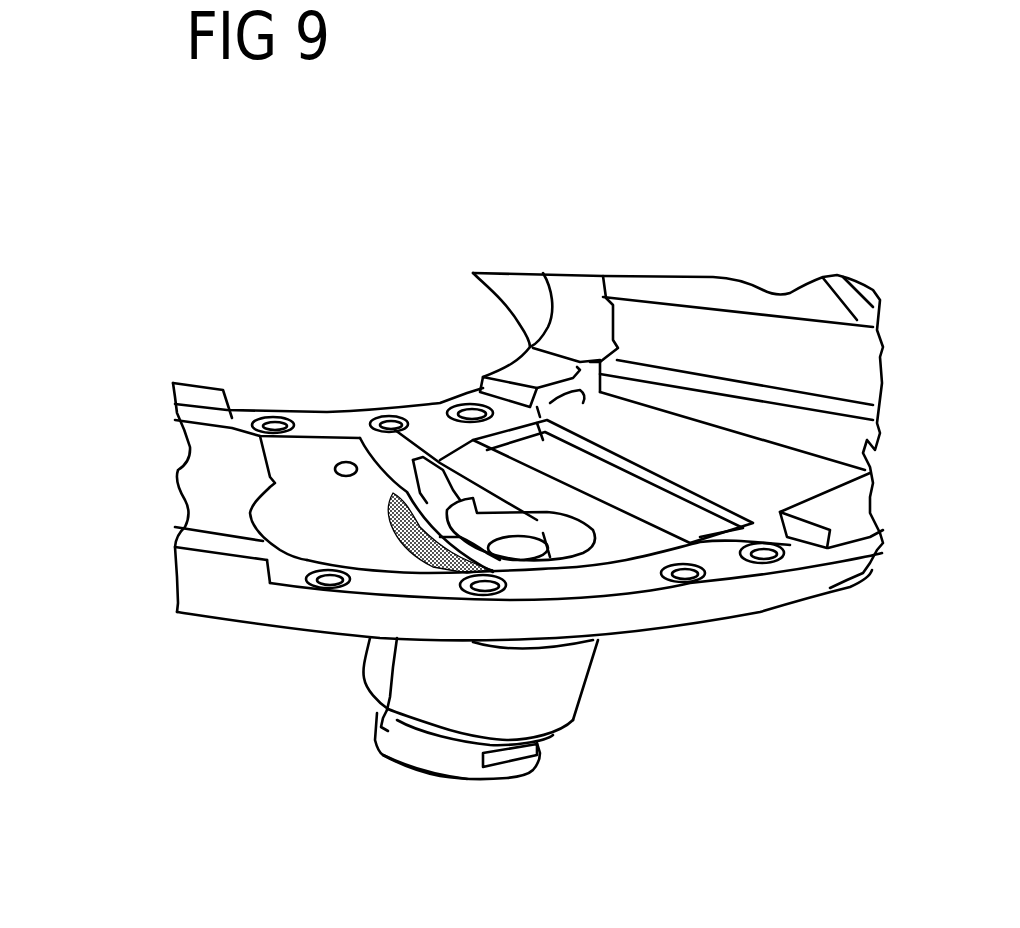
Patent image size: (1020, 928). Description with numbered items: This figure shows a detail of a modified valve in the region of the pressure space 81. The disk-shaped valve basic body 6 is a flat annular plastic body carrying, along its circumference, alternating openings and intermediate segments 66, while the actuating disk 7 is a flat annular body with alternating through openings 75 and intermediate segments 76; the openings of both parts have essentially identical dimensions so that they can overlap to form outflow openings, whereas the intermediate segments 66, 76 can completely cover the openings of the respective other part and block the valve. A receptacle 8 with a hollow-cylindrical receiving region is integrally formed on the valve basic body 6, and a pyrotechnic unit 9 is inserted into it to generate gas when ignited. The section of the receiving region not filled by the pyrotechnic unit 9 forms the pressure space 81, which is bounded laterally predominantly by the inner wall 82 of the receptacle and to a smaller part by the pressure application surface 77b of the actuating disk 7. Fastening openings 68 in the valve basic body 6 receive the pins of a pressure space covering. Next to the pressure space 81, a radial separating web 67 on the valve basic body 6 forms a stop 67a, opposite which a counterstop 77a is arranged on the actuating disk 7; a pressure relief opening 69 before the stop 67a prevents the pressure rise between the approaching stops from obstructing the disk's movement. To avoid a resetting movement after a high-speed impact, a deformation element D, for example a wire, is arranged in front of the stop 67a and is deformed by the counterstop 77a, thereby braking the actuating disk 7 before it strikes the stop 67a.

The valve basic body 6 is at (214, 632).
The actuating disk 7 is at (168, 484).
The receptacle 8 is at (596, 707).
The pyrotechnic unit 9 is at (460, 791).
The intermediate segments 66 is at (545, 530).
The separating web 67 is at (424, 476).
The stop 67a is at (370, 466).
The fastening openings 68 is at (468, 395).
The pressure relief opening 69 is at (338, 460).
The through openings 75 is at (779, 398).
The intermediate segments 76 is at (835, 353).
The counterstop 77a is at (262, 485).
The pressure application surface 77b is at (583, 551).
The pressure space 81 is at (450, 535).
The inner wall 82 is at (603, 632).
The deformation element D is at (362, 521).